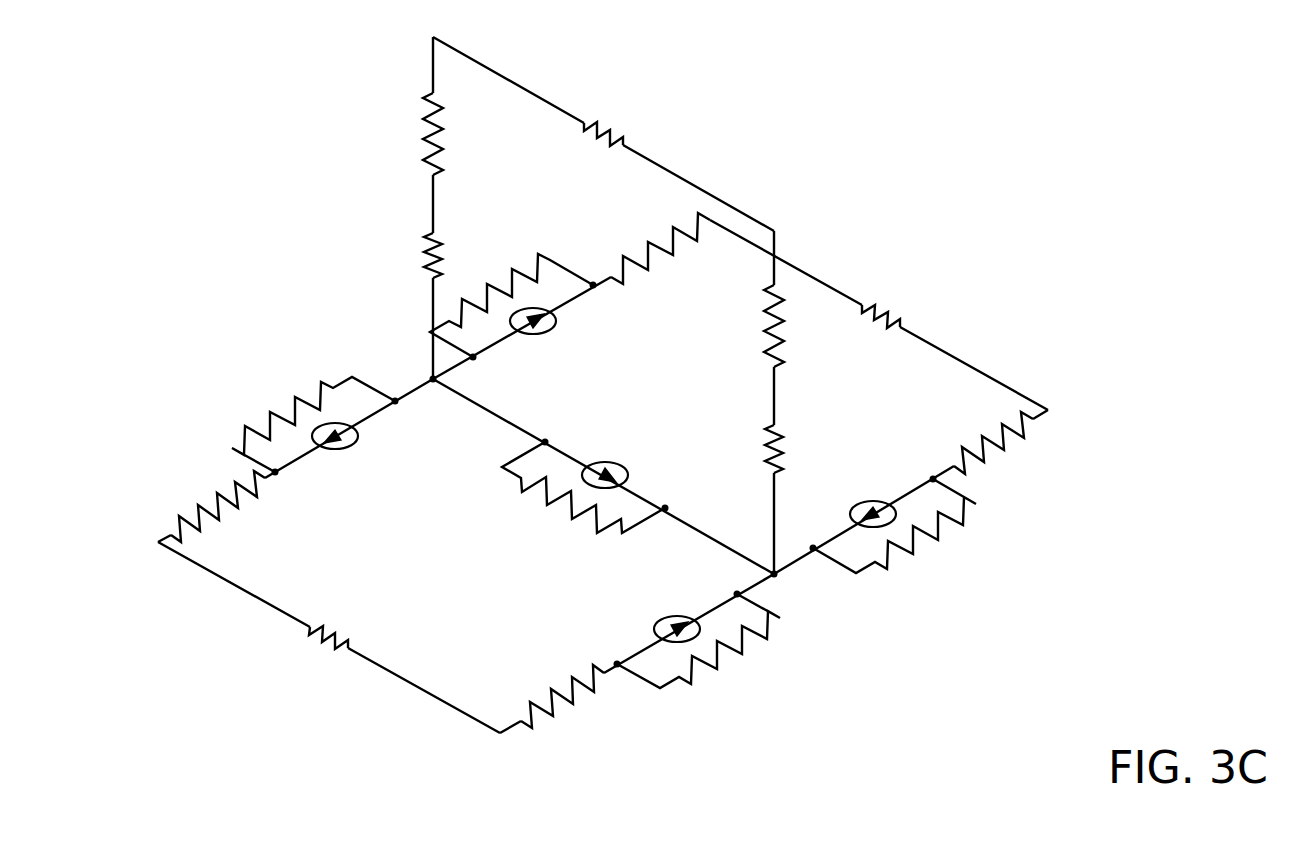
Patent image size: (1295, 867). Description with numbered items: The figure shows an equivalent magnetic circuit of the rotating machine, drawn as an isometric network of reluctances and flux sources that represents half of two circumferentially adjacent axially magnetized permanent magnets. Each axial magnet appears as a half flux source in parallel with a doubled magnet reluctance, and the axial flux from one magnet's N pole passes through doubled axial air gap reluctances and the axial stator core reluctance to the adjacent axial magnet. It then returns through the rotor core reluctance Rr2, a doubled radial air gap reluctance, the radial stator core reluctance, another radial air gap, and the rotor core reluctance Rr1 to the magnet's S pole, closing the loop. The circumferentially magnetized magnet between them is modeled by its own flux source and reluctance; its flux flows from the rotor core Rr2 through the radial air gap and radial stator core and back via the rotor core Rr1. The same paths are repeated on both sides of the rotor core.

The reluctance of rotor core Rr1 is at (430, 248).
The reluctance of rotor core Rr2 is at (767, 442).